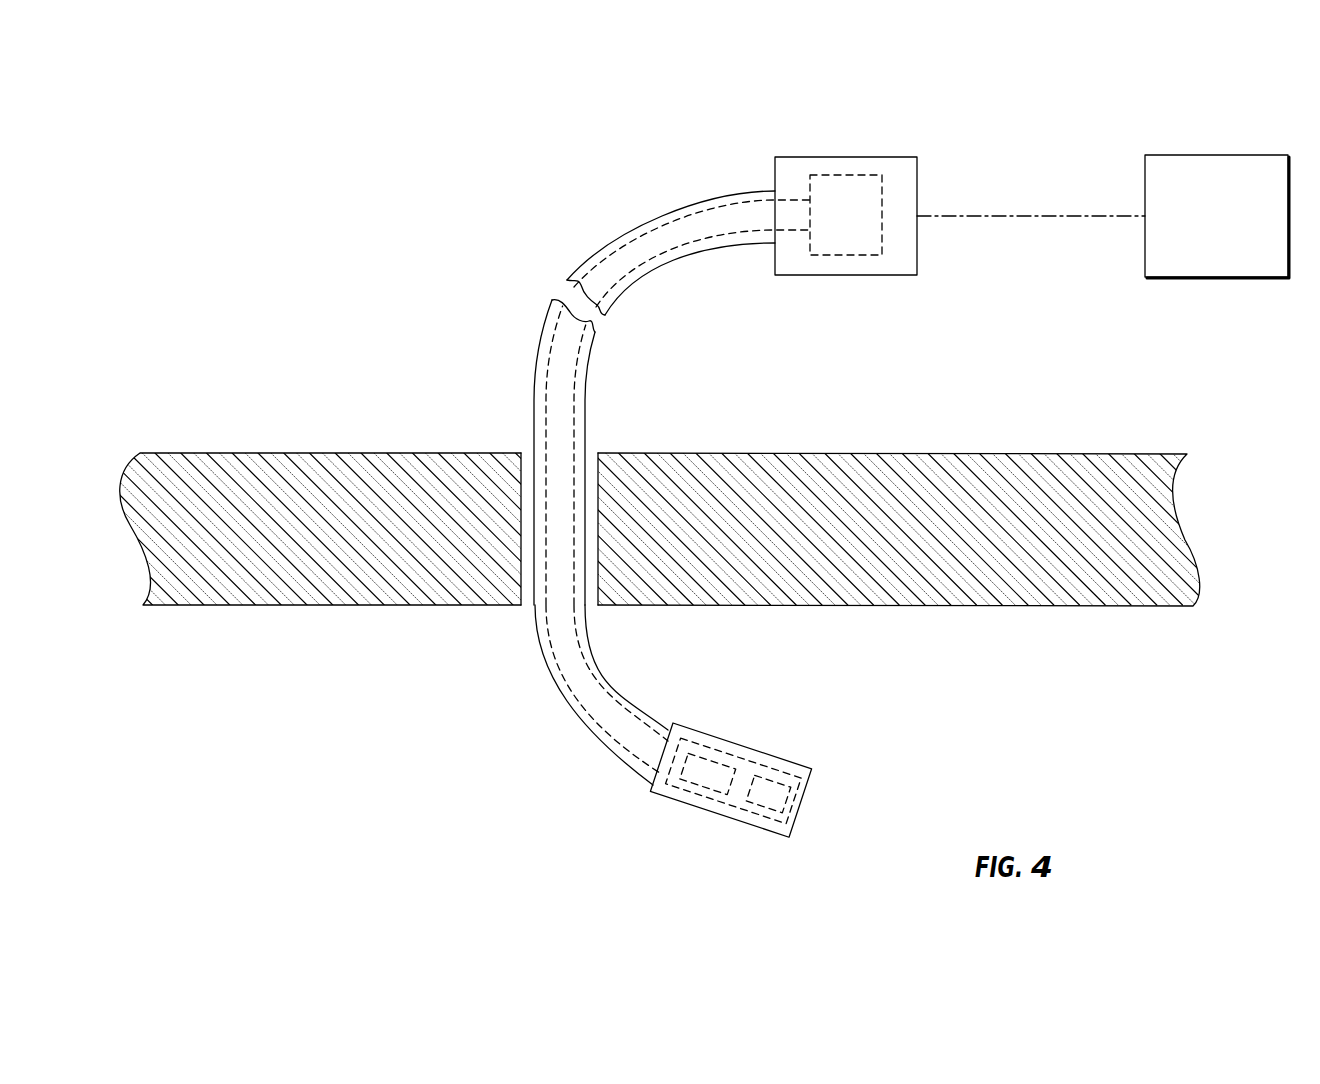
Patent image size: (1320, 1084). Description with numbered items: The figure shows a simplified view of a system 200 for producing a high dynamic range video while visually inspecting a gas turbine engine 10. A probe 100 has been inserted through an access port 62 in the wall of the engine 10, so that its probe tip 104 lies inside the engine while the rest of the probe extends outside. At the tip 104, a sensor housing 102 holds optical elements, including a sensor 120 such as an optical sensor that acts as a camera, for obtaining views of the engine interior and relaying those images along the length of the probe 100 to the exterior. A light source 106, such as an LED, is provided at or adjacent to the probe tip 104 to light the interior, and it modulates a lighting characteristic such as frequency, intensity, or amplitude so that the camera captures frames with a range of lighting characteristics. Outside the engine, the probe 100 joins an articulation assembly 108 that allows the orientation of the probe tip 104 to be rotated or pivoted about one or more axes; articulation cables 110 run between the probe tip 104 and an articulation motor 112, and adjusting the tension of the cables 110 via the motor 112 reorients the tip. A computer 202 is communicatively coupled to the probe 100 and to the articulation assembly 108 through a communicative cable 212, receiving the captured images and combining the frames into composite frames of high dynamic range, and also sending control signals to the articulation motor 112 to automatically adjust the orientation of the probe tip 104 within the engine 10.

The gas turbine engine 10 is at (200, 452).
The access port 62 is at (600, 482).
The probe 100 is at (488, 370).
The sensor housing 102 is at (705, 799).
The probe tip 104 is at (772, 757).
The light source 106 is at (776, 823).
The articulation assembly 108 is at (758, 180).
The articulation cables 110 is at (620, 245).
The articulation motor 112 is at (848, 175).
The sensor 120 is at (708, 738).
The system for producing a high dynamic range video 200 is at (373, 225).
The computer 202 is at (1233, 229).
The communicative cable 212 is at (1038, 216).